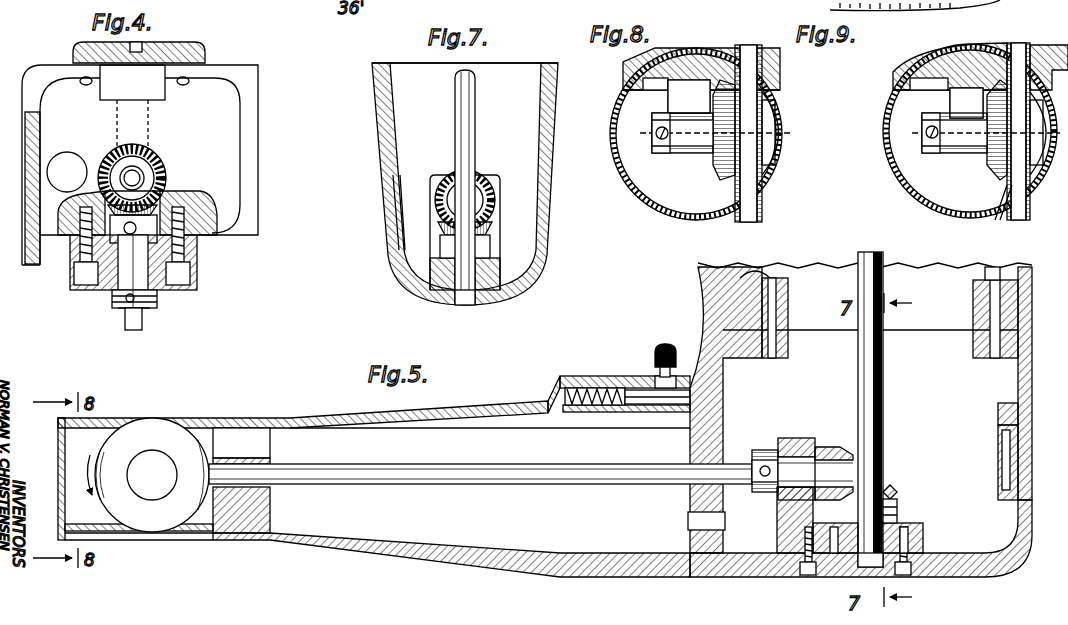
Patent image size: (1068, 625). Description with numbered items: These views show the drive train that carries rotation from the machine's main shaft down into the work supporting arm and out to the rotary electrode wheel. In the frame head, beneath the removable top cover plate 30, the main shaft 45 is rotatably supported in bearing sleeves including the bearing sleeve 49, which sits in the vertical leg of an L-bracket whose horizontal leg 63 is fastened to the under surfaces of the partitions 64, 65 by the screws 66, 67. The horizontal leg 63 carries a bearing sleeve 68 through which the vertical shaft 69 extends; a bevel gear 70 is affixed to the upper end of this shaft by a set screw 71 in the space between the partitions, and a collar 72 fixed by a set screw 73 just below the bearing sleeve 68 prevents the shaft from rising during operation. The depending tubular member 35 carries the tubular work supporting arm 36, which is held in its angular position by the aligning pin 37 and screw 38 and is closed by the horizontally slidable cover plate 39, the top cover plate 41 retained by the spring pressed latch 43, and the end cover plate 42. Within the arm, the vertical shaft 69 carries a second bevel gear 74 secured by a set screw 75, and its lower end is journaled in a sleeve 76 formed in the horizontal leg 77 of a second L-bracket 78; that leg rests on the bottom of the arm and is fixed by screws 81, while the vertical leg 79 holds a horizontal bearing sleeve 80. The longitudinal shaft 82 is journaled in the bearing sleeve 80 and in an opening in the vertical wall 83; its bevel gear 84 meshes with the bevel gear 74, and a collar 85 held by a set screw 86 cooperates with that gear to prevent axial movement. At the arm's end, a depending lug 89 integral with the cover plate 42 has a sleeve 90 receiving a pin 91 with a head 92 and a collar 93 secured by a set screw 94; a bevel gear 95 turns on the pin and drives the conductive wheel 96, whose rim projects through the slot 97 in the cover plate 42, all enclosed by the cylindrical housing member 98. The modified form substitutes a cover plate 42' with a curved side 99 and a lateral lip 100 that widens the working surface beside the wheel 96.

In FIG. 4, the top cover plate 30 is at (205, 56).
In FIG. 4, the bearing sleeve 49 is at (150, 150).
In FIG. 4, the main shaft 45 is at (160, 170).
In FIG. 4, the bevel gear 70 is at (160, 200).
In FIG. 4, the set screw 71 is at (136, 228).
In FIG. 4, the partition 65 is at (208, 235).
In FIG. 4, the partition 64 is at (60, 265).
In FIG. 4, the screw 66 is at (80, 275).
In FIG. 4, the screw 67 is at (190, 280).
In FIG. 4, the horizontal leg 63 is at (196, 290).
In FIG. 4, the bearing sleeve 68 is at (112, 300).
In FIG. 4, the collar 72 is at (157, 300).
In FIG. 4, the set screw 73 is at (125, 312).
In FIG. 4, the vertical shaft 69 is at (142, 325).
In FIG. 7, the vertical shaft 69 is at (476, 95).
In FIG. 5, the vertical shaft 69 is at (883, 258).
In FIG. 7, the horizontally slidable cover plate 39 is at (386, 205).
In FIG. 7, the vertical leg 79 is at (430, 185).
In FIG. 5, the vertical leg 79 is at (777, 513).
In FIG. 7, the second L-bracket 78 is at (510, 176).
In FIG. 5, the second L-bracket 78 is at (774, 540).
In FIG. 7, the second bevel gear 74 is at (490, 215).
In FIG. 5, the second bevel gear 74 is at (893, 488).
In FIG. 7, the set screw 75 is at (470, 246).
In FIG. 5, the set screw 75 is at (897, 504).
In FIG. 7, the horizontal leg 77 is at (432, 272).
In FIG. 5, the horizontal leg 77 is at (924, 538).
In FIG. 7, the sleeve 76 is at (472, 300).
In FIG. 5, the sleeve 76 is at (858, 568).
In FIG. 8, the cover plate 42 is at (701, 58).
In FIG. 8, the slot 97 is at (728, 80).
In FIG. 9, the slot 97 is at (1003, 43).
In FIG. 8, the depending lug 89 is at (668, 100).
In FIG. 9, the depending lug 89 is at (950, 100).
In FIG. 8, the pin 91 is at (658, 135).
In FIG. 9, the pin 91 is at (928, 130).
In FIG. 8, the set screw 94 is at (655, 145).
In FIG. 9, the set screw 94 is at (925, 143).
In FIG. 8, the collar 93 is at (662, 156).
In FIG. 9, the collar 93 is at (935, 156).
In FIG. 8, the sleeve 90 is at (705, 156).
In FIG. 9, the sleeve 90 is at (970, 158).
In FIG. 8, the head 92 is at (775, 140).
In FIG. 9, the head 92 is at (1035, 178).
In FIG. 5, the head 92 is at (152, 500).
In FIG. 8, the wheel 96 is at (763, 212).
In FIG. 9, the wheel 96 is at (1030, 218).
In FIG. 5, the wheel 96 is at (155, 424).
In FIG. 8, the housing member 98 is at (672, 218).
In FIG. 9, the housing member 98 is at (907, 210).
In FIG. 5, the housing member 98 is at (138, 540).
In FIG. 9, the curved side 99 is at (928, 62).
In FIG. 9, the cover plate 42' is at (950, 66).
In FIG. 9, the lateral extension or lip 100 is at (1058, 45).
In FIG. 9, the bevel gear 95 is at (996, 220).
In FIG. 5, the depending tubular member 35 is at (1032, 312).
In FIG. 5, the aligning pin 37 is at (995, 280).
In FIG. 5, the screw 38 is at (774, 258).
In FIG. 5, the top cover plate 41 is at (452, 401).
In FIG. 5, the spring pressed latch 43 is at (656, 372).
In FIG. 5, the collar 85 is at (768, 464).
In FIG. 5, the set screw 86 is at (764, 450).
In FIG. 5, the horizontal bearing sleeve 80 is at (806, 426).
In FIG. 5, the bevel gear 84 is at (846, 447).
In FIG. 5, the shaft 82 is at (586, 476).
In FIG. 5, the vertical wall 83 is at (272, 510).
In FIG. 5, the work supporting arm 36 is at (612, 566).
In FIG. 5, the screws 81 is at (800, 575).